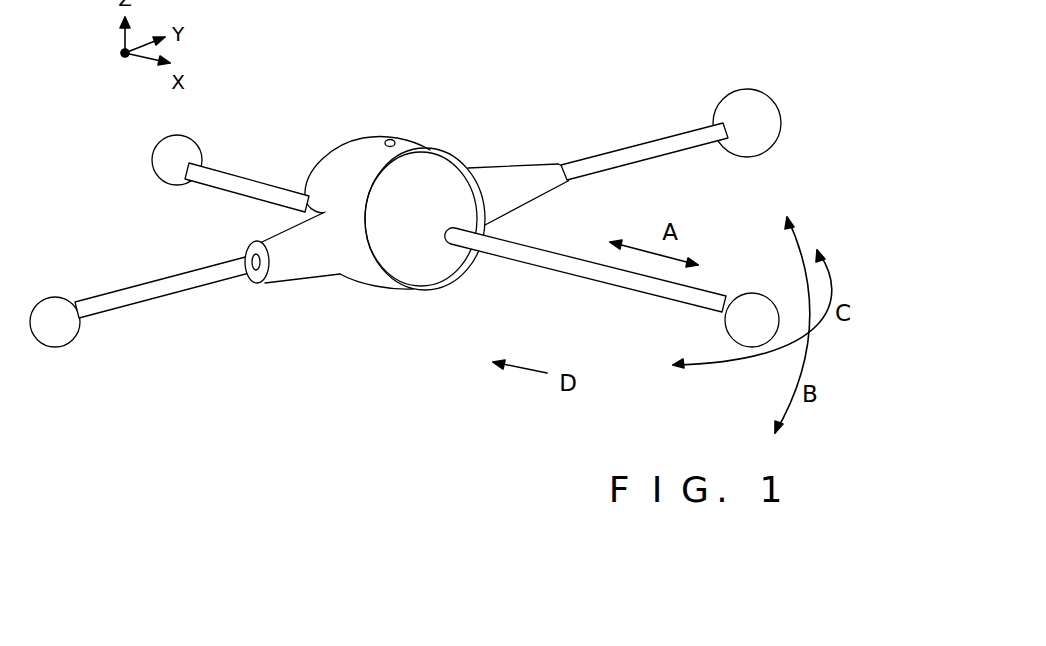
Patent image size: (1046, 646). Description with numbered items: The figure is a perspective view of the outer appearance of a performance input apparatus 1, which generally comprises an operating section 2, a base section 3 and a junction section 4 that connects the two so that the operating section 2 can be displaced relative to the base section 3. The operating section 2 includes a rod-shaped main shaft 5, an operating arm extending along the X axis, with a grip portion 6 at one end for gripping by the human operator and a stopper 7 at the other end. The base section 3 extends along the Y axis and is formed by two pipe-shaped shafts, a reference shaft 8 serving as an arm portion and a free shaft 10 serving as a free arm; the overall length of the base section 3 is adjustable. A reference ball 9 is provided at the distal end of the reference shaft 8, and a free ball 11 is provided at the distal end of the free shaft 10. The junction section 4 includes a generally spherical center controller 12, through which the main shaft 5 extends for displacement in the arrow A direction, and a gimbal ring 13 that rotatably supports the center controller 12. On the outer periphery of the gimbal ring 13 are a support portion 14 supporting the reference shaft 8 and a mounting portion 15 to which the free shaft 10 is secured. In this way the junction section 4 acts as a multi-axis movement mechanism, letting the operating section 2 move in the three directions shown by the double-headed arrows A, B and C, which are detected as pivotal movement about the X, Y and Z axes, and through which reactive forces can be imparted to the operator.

The performance input apparatus 1 is at (358, 93).
The operating section 2 is at (612, 295).
The base section 3 is at (671, 106).
The junction section 4 is at (356, 290).
The main shaft 5 is at (538, 268).
The grip portion 6 is at (752, 290).
The stopper 7 is at (147, 167).
The reference shaft 8 is at (650, 138).
The reference ball 9 is at (745, 90).
The free shaft 10 is at (162, 300).
The free ball 11 is at (57, 293).
The center controller 12 is at (402, 257).
The gimbal ring 13 is at (345, 165).
The support portion 14 is at (502, 182).
The mounting portion 15 is at (280, 262).